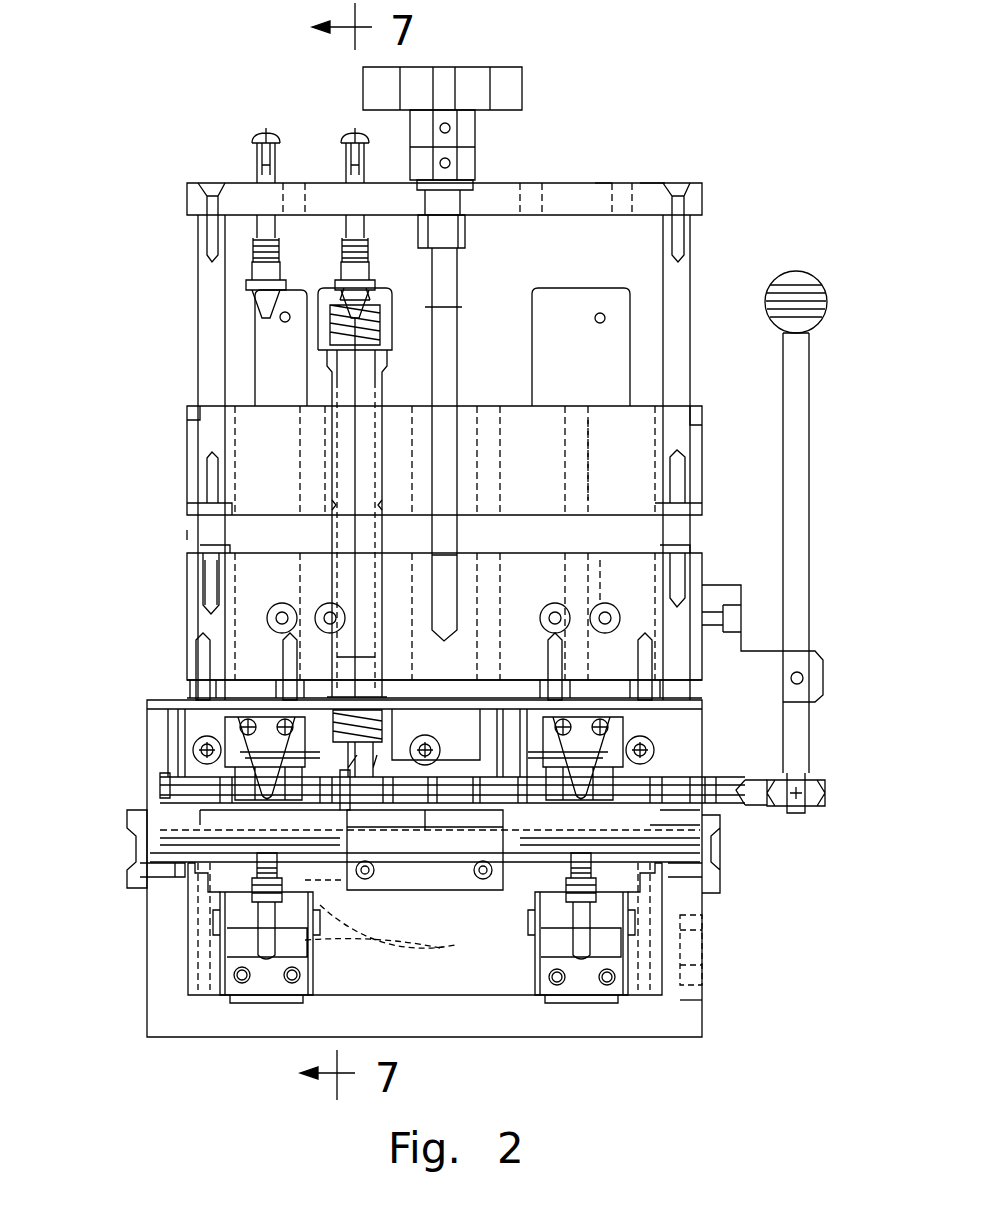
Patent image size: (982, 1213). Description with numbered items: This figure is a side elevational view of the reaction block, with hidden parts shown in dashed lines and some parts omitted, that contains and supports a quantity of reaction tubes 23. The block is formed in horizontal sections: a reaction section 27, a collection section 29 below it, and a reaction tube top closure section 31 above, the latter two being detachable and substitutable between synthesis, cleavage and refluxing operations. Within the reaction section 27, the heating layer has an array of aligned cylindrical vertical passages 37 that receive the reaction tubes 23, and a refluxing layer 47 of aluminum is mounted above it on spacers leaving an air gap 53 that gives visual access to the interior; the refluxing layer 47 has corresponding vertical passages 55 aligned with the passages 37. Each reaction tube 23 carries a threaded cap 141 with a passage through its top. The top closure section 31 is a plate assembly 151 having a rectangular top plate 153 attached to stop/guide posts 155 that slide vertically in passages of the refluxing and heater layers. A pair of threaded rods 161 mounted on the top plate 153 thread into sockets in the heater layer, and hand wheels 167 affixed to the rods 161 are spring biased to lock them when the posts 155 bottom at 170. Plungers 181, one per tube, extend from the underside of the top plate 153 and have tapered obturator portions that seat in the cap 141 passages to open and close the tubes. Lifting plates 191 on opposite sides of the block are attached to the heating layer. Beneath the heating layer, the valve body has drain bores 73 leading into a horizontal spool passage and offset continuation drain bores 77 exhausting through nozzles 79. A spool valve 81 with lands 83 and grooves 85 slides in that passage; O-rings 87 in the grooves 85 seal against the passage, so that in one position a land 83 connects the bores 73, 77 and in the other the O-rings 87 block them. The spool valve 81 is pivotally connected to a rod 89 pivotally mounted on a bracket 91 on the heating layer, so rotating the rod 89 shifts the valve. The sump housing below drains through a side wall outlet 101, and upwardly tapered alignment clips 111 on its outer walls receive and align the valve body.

The hand wheel 167 is at (512, 88).
The rod 161 is at (455, 325).
The reaction tube top closure section 31 is at (576, 172).
The plate assembly 151 is at (600, 183).
The top plate 153 is at (650, 183).
The stop/guide post 155 is at (205, 307).
The plunger 181 is at (248, 239).
The lifting plate 191 is at (270, 342).
The threaded cap 141 is at (380, 292).
The reaction tube 23 is at (340, 385).
The refluxing layer 47 is at (205, 437).
The vertical passage 55 is at (592, 437).
The reaction section 27 is at (160, 541).
The air gap 53 is at (688, 535).
The bottom of stop/guide post travel 170 is at (210, 545).
The vertical passage 37 is at (600, 578).
The rod 89 is at (794, 510).
The bracket 91 is at (822, 665).
The collection section 29 is at (118, 1016).
The spool valve 81 is at (178, 783).
The O-ring 87 is at (405, 762).
The drain bore 73 is at (455, 762).
The land 83 is at (700, 807).
The groove 85 is at (235, 820).
The alignment clip 111 is at (128, 827).
The nozzle 79 is at (438, 895).
The continuation drain bore 77 is at (462, 900).
The side wall outlet 101 is at (705, 955).